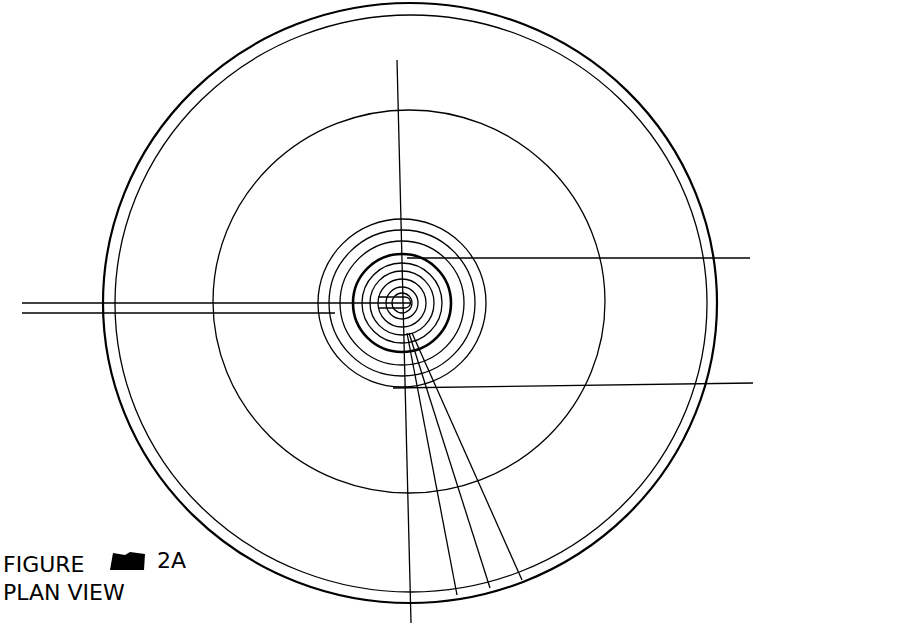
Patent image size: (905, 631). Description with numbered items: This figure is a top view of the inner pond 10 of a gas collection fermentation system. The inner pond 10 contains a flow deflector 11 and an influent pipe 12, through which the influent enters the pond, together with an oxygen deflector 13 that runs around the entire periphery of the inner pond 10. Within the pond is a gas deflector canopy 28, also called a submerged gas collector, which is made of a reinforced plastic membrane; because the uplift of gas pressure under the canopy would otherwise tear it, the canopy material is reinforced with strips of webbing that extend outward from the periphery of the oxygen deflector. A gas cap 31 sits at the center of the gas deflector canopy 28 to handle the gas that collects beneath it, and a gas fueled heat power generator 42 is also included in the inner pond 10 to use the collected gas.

The inner pond 10 is at (414, 303).
The flow deflector 11 is at (432, 288).
The influent pipe 12 is at (216, 341).
The oxygen deflector 13 is at (617, 525).
The gas deflector canopy 28 is at (486, 464).
The gas cap 31 is at (421, 303).
The gas fueled heat power generator 42 is at (440, 303).